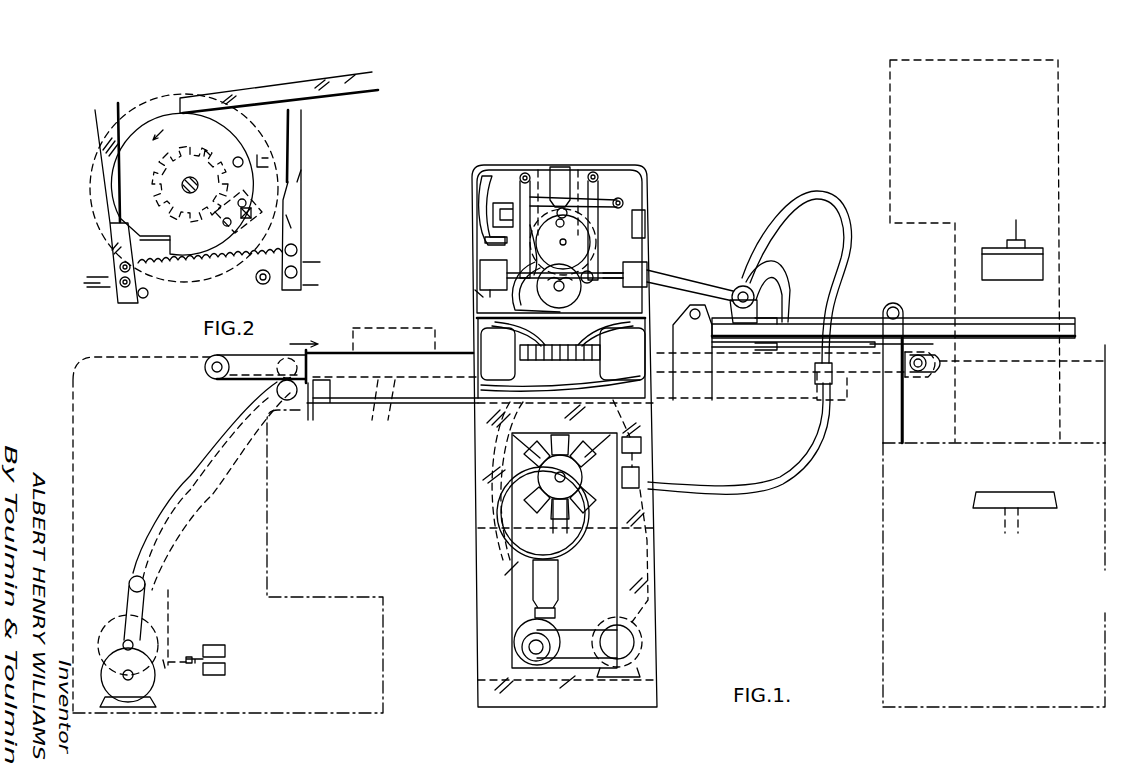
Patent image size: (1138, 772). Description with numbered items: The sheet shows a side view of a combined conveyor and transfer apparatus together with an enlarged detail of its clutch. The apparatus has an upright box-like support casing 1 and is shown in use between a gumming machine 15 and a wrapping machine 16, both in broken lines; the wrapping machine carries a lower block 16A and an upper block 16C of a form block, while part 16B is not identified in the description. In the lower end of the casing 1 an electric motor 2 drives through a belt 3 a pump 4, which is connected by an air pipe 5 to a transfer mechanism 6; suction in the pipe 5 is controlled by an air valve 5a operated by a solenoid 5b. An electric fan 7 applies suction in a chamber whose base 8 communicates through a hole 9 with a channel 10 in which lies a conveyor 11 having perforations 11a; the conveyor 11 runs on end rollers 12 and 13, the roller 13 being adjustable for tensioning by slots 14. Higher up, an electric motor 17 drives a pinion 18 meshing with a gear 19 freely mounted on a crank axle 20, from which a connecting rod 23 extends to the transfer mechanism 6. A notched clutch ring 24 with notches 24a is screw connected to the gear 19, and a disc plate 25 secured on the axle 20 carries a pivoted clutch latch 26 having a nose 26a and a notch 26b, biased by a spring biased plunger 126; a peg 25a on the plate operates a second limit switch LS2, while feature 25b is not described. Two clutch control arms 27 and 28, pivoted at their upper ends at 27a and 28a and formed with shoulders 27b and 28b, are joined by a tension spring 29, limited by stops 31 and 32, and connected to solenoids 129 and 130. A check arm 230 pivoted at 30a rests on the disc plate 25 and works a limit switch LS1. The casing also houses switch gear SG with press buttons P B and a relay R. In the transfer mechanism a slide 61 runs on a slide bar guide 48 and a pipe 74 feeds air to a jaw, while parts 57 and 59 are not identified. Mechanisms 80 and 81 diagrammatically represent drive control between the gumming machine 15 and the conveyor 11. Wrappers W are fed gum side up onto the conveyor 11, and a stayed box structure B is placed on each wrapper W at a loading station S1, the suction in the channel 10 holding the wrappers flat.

In FIG. 1, the support casing 1 is at (660, 600).
In FIG. 1, the electric motor 2 is at (637, 647).
In FIG. 1, the belt 3 is at (578, 630).
In FIG. 1, the pump 4 is at (530, 632).
In FIG. 1, the air pipe 5 is at (703, 556).
In FIG. 1, the air valve 5a is at (640, 490).
In FIG. 1, the solenoid 5b is at (641, 450).
In FIG. 1, the transfer mechanism 6 is at (799, 312).
In FIG. 1, the electric fan 7 is at (553, 473).
In FIG. 1, the base of suction chamber 8 is at (477, 540).
In FIG. 1, the hole 9 is at (478, 433).
In FIG. 1, the channel 10 is at (338, 403).
In FIG. 1, the conveyor 11 is at (313, 383).
In FIG. 1, the perforations 11a is at (390, 397).
In FIG. 1, the end roller 12 is at (232, 366).
In FIG. 1, the end roller 13 is at (918, 375).
In FIG. 1, the slots 14 is at (940, 368).
In FIG. 1, the gumming machine 15 is at (90, 372).
In FIG. 1, the wrapping machine 16 is at (1105, 612).
In FIG. 1, the lower block 16A is at (1018, 510).
In FIG. 1, the discharge switch stem 16B is at (1015, 236).
In FIG. 1, the upper block 16C is at (1010, 273).
In FIG. 1, the electric motor 17 is at (550, 293).
In FIG. 1, the pinion 18 is at (590, 296).
In FIG. 2, the gear 19 is at (184, 177).
In FIG. 1, the gear 19 is at (558, 168).
In FIG. 1, the crank axle 20 is at (566, 243).
In FIG. 1, the connecting rod 23 is at (693, 282).
In FIG. 2, the notched clutch ring 24 is at (193, 179).
In FIG. 2, the notches 24a is at (174, 160).
In FIG. 2, the disc plate 25 is at (148, 140).
In FIG. 1, the disc plate 25 is at (588, 232).
In FIG. 1, the peg 25a is at (553, 220).
In FIG. 2, the disc notch 25b is at (150, 240).
In FIG. 2, the clutch latch 26 is at (250, 152).
In FIG. 2, the nose 26a is at (207, 152).
In FIG. 2, the notch 26b is at (262, 163).
In FIG. 2, the clutch control arm 27 is at (128, 303).
In FIG. 1, the clutch control arm 27 is at (523, 203).
In FIG. 1, the pivot 27a is at (523, 173).
In FIG. 2, the shoulder 27b is at (118, 221).
In FIG. 2, the clutch control arm 28 is at (309, 202).
In FIG. 1, the clutch control arm 28 is at (593, 193).
In FIG. 1, the pivot 28a is at (595, 172).
In FIG. 2, the shoulder 28b is at (288, 173).
In FIG. 2, the tension spring 29 is at (200, 262).
In FIG. 1, the pivot 30a is at (623, 203).
In FIG. 2, the stop 31 is at (148, 294).
In FIG. 2, the stop 32 is at (267, 283).
In FIG. 1, the slide bar guide 48 is at (1064, 337).
In FIG. 1, the support column 57 is at (880, 423).
In FIG. 1, the bracket support 59 is at (700, 392).
In FIG. 1, the slide 61 is at (948, 320).
In FIG. 1, the pipe 74 is at (764, 275).
In FIG. 1, the drive control mechanism 80 is at (187, 473).
In FIG. 1, the drive control mechanism 81 is at (225, 650).
In FIG. 2, the spring biased plunger 126 is at (245, 192).
In FIG. 1, the solenoid 129 is at (480, 275).
In FIG. 1, the solenoid 130 is at (672, 285).
In FIG. 2, the check arm 230 is at (295, 100).
In FIG. 1, the check arm 230 is at (570, 205).
In FIG. 1, the relay R is at (500, 208).
In FIG. 1, the limit switch LS1 is at (645, 240).
In FIG. 1, the second limit switch LS2 is at (564, 205).
In FIG. 1, the switch gear SG is at (510, 350).
In FIG. 1, the press button P is at (525, 332).
In FIG. 1, the stayed box structure B is at (360, 312).
In FIG. 1, the loading station S1 is at (391, 316).
In FIG. 1, the wrappers W is at (345, 348).